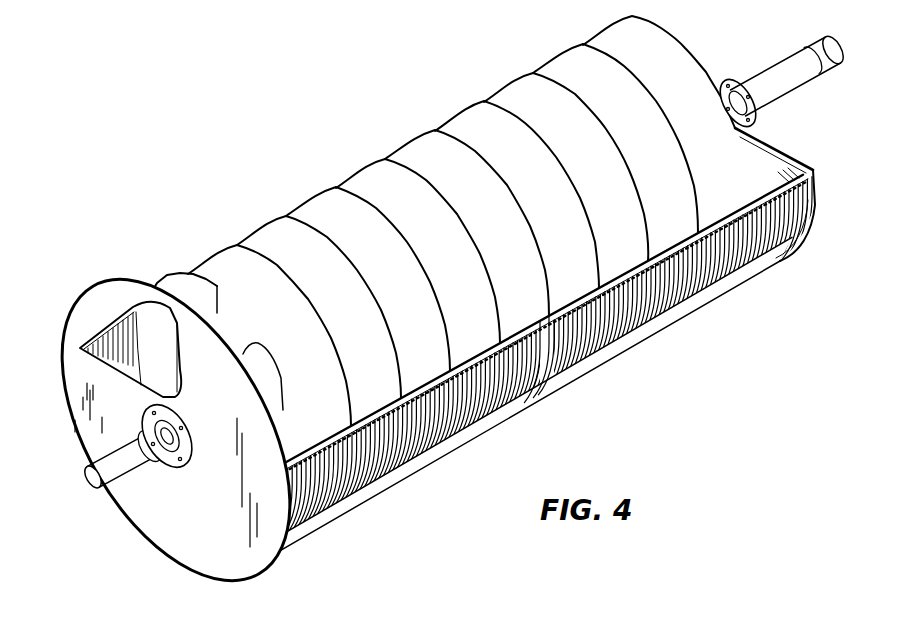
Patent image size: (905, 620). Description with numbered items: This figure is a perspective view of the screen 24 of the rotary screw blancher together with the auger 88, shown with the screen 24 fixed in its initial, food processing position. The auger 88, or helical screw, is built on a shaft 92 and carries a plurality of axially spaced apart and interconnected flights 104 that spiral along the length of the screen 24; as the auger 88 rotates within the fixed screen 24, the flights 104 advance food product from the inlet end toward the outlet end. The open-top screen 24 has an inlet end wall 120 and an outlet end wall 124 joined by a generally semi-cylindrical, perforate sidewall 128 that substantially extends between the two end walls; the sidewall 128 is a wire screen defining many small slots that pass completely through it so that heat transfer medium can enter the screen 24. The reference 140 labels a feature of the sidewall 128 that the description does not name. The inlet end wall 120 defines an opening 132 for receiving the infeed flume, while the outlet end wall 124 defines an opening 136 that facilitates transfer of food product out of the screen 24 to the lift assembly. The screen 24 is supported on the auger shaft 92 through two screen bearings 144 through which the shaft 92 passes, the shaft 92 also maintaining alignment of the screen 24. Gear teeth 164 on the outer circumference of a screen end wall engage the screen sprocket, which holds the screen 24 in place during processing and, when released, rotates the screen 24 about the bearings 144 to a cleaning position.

The screen 24 is at (306, 549).
The auger 88 is at (440, 221).
The shaft 92 is at (126, 460).
The flights 104 is at (513, 88).
The inlet end wall 120 is at (200, 554).
The outlet end wall 124 is at (573, 332).
The sidewall 128 is at (683, 302).
The opening 132 is at (112, 304).
The opening 136 is at (803, 185).
The slots 140 is at (435, 447).
The screen bearings 144 is at (735, 84).
The gear teeth 164 is at (122, 281).